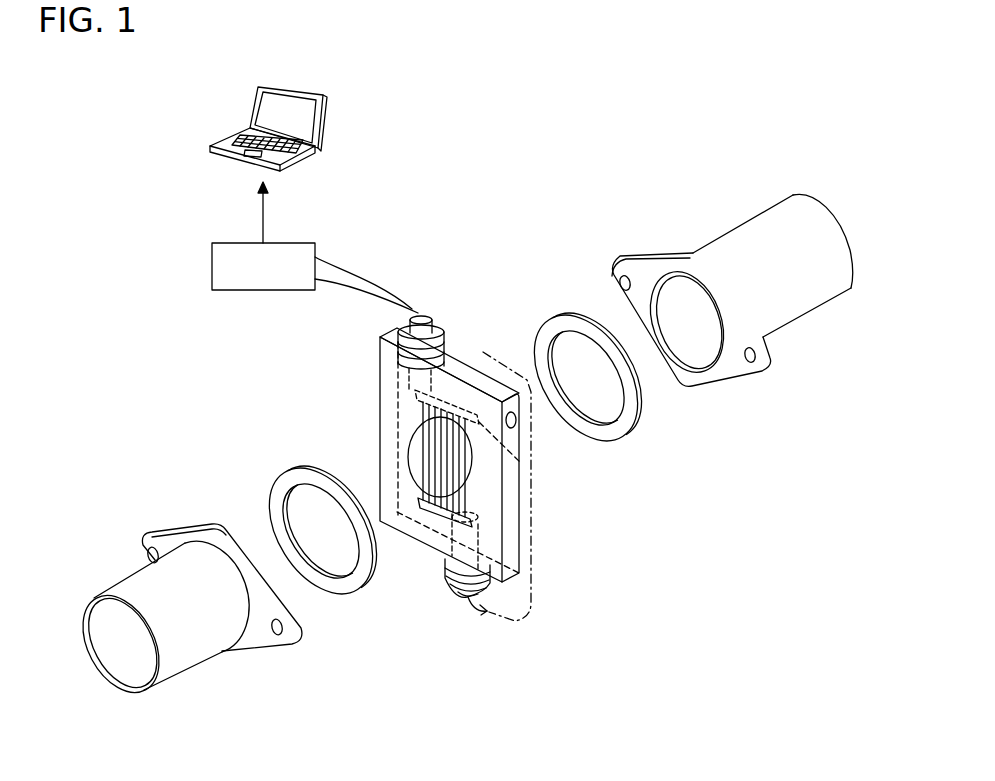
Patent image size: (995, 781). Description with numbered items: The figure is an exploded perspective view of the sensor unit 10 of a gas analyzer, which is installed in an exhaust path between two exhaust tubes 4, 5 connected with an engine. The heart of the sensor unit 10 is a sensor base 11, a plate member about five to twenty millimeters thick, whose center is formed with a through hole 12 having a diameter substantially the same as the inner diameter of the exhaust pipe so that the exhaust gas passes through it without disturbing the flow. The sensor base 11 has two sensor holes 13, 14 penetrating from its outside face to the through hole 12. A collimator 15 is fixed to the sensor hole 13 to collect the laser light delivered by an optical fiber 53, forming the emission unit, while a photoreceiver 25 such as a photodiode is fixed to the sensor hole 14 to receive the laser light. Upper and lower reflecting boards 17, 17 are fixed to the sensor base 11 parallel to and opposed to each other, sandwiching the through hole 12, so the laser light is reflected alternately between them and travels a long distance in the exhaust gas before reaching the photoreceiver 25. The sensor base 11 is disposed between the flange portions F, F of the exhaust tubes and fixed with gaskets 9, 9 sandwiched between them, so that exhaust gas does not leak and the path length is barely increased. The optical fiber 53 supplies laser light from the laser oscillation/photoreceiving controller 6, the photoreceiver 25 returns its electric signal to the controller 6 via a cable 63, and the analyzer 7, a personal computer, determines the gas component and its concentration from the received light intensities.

The exhaust tube 4 is at (184, 615).
The exhaust tube 5 is at (802, 314).
The laser oscillation/photoreceiving controller 6 is at (246, 303).
The analyzer 7 is at (336, 115).
The gasket 9 is at (618, 433).
The sensor unit 10 is at (426, 460).
The sensor base 11 is at (436, 548).
The through hole 12 is at (416, 455).
The sensor hole 13 is at (416, 400).
The sensor hole 14 is at (473, 519).
The collimator 15 is at (428, 314).
The reflecting board 17 is at (532, 484).
The photoreceiver 25 is at (467, 599).
The optical fiber 53 is at (406, 311).
The cable 63 is at (483, 352).
The flange portion F is at (256, 652).